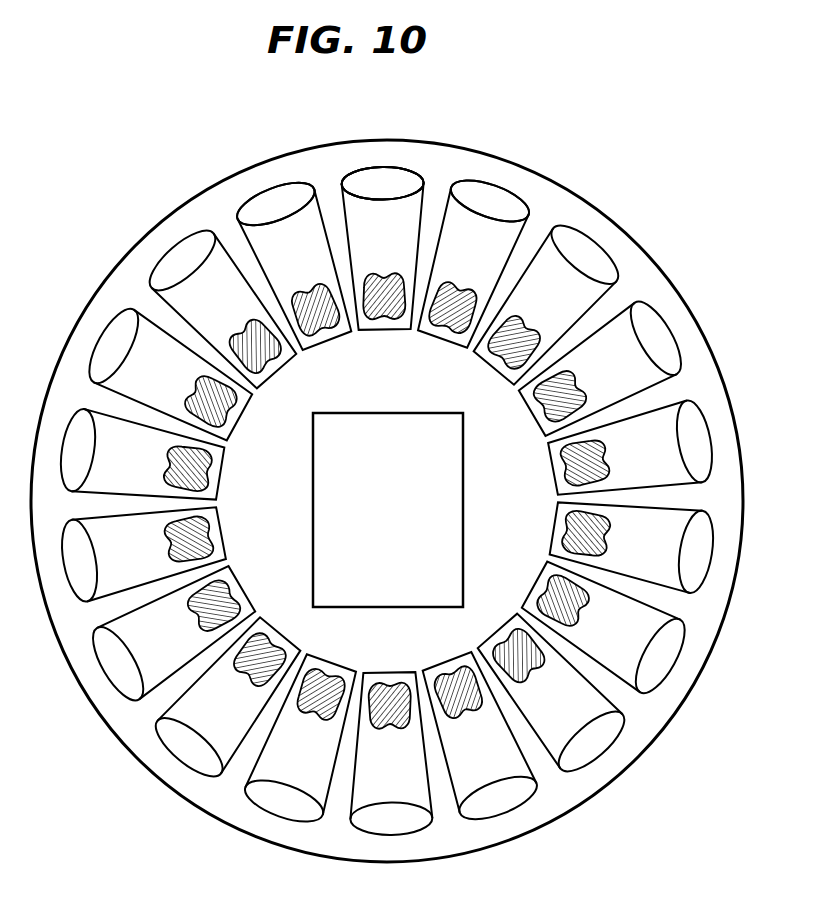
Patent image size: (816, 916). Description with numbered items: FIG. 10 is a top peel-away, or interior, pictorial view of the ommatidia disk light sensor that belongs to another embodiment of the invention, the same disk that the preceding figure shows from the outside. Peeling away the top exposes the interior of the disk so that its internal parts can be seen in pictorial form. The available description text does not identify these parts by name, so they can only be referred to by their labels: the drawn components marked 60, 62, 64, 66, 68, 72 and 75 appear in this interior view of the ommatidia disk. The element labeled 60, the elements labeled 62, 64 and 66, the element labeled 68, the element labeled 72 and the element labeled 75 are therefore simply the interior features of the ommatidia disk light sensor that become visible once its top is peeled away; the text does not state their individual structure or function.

The housing disk 60 is at (677, 290).
The cylindrical cells 62 is at (163, 255).
The walls between cells 64 is at (140, 297).
The cell openings 66 is at (380, 217).
The sample deposits 68 is at (525, 342).
The cell ends 72 is at (405, 182).
The charge transfer and random logic 75 is at (463, 523).